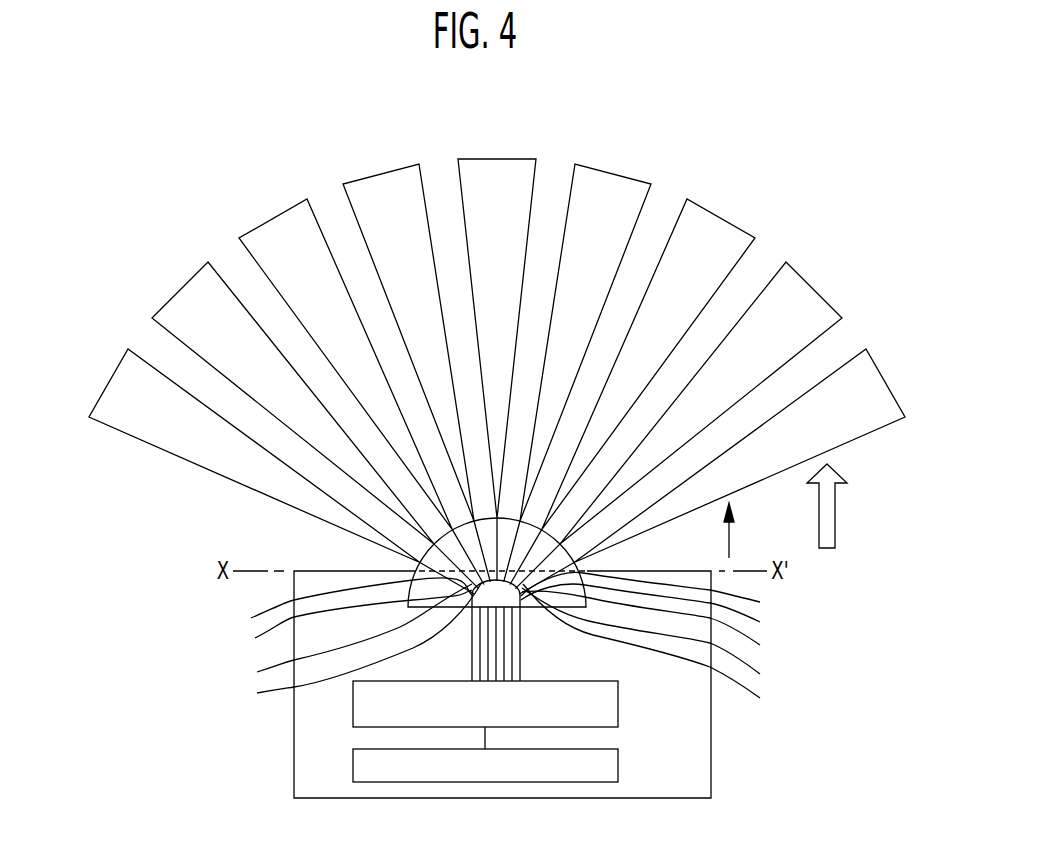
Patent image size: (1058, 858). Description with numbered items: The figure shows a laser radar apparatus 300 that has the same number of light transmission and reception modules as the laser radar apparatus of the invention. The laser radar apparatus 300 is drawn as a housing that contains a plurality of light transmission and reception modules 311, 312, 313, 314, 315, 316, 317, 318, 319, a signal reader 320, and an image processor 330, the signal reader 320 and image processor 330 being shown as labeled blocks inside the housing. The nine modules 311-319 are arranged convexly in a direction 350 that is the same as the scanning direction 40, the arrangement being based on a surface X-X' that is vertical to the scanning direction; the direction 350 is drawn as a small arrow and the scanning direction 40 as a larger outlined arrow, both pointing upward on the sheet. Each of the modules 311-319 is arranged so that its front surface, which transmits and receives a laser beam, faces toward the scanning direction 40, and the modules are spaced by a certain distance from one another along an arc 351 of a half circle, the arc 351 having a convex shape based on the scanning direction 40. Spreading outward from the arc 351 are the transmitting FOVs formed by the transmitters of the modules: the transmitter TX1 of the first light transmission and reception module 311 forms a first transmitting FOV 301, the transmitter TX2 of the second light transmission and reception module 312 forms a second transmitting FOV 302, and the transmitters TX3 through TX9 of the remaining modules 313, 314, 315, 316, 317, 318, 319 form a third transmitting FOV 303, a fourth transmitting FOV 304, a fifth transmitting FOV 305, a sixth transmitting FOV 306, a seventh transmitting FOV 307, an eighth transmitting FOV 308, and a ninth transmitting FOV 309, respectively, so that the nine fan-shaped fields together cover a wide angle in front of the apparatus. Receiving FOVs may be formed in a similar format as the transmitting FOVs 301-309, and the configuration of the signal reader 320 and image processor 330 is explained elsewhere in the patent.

The first transmitting FOV 301 is at (110, 378).
The second transmitting FOV 302 is at (182, 290).
The third transmitting FOV 303 is at (272, 219).
The fourth transmitting FOV 304 is at (382, 174).
The fifth transmitting FOV 305 is at (497, 158).
The sixth transmitting FOV 306 is at (617, 175).
The seventh transmitting FOV 307 is at (722, 219).
The eighth transmitting FOV 308 is at (812, 289).
The ninth transmitting FOV 309 is at (884, 380).
The first light transmission and reception module 311 is at (346, 605).
The second light transmission and reception module 312 is at (347, 623).
The third light transmission and reception module 313 is at (347, 633).
The fourth light transmission and reception module 314 is at (352, 646).
The fifth light transmission and reception module 315 is at (658, 651).
The sixth light transmission and reception module 316 is at (658, 641).
The seventh light transmission and reception module 317 is at (658, 628).
The eighth light transmission and reception module 318 is at (657, 613).
The ninth light transmission and reception module 319 is at (657, 594).
The signal reader 320 is at (619, 703).
The image processor 330 is at (619, 764).
The laser radar apparatus 300 is at (711, 786).
The direction 350 is at (730, 531).
The arc of a half circle 351 is at (538, 612).
The scanning direction 40 is at (835, 502).